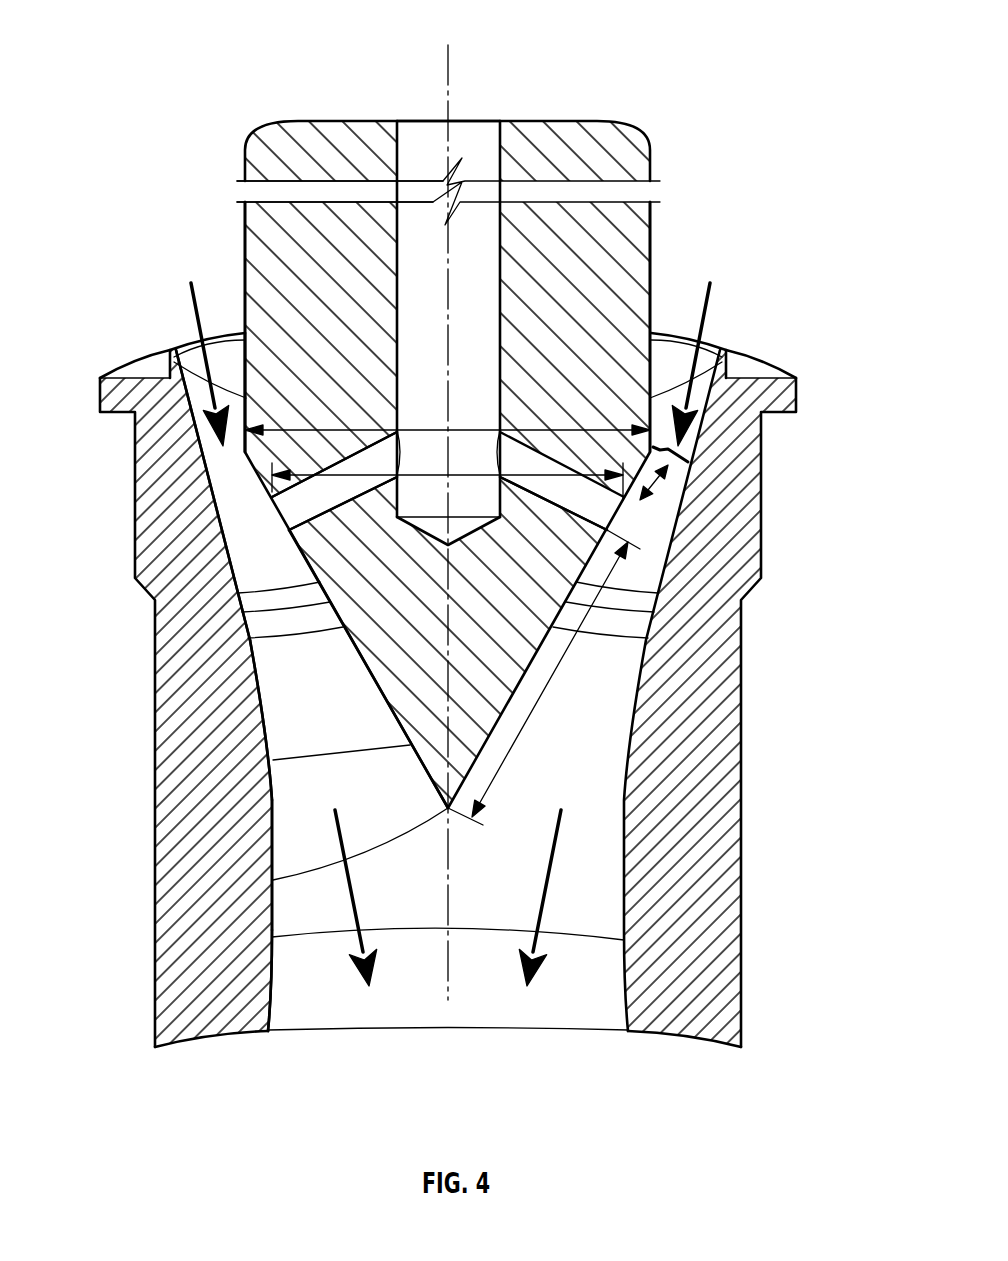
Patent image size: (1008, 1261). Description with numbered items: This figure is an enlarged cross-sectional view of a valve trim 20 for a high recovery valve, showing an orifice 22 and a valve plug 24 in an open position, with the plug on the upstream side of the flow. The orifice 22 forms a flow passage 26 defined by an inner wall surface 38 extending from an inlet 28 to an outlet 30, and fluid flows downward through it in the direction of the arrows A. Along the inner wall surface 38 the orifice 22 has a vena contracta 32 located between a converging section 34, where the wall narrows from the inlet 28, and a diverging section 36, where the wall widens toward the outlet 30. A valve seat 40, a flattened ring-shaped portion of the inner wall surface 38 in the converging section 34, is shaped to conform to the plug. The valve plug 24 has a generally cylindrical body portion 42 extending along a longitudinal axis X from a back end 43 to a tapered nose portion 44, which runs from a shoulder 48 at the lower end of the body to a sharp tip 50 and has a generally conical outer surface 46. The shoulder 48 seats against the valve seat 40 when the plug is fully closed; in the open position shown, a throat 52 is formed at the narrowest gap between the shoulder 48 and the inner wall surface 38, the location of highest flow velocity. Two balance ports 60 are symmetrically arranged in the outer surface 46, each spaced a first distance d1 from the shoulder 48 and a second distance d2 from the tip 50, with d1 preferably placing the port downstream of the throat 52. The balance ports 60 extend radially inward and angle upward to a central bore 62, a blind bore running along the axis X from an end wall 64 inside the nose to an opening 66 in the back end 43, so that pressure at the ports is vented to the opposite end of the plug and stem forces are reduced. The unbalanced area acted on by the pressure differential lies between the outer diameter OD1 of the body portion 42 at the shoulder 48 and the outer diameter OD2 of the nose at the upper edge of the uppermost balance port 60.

The valve trim 20 is at (757, 178).
The orifice 22 is at (745, 898).
The valve plug 24 is at (476, 195).
The flow passage 26 is at (404, 874).
The inlet 28 is at (180, 350).
The outlet 30 is at (297, 1030).
The vena contracta 32 is at (273, 935).
The converging section 34 is at (293, 518).
The diverging section 36 is at (290, 1000).
The inner wall surface 38 is at (302, 743).
The valve seat 40 is at (330, 630).
The body portion 42 is at (245, 253).
The back end 43 is at (563, 120).
The tapered nose portion 44 is at (371, 673).
The tapered outer surface 46 is at (273, 760).
The shoulder 48 is at (247, 452).
The tip 50 is at (273, 877).
The throat 52 is at (655, 448).
The balance port 60 is at (268, 537).
The central bore 62 is at (416, 230).
The end wall 64 is at (320, 580).
The opening 66 is at (475, 120).
The longitudinal axis X is at (452, 67).
The arrows A is at (191, 313).
The outer diameter of the body portion OD1 is at (570, 427).
The outer diameter of the tapered nose portion OD2 is at (555, 430).
The first distance d1 is at (662, 487).
The second distance d2 is at (541, 693).